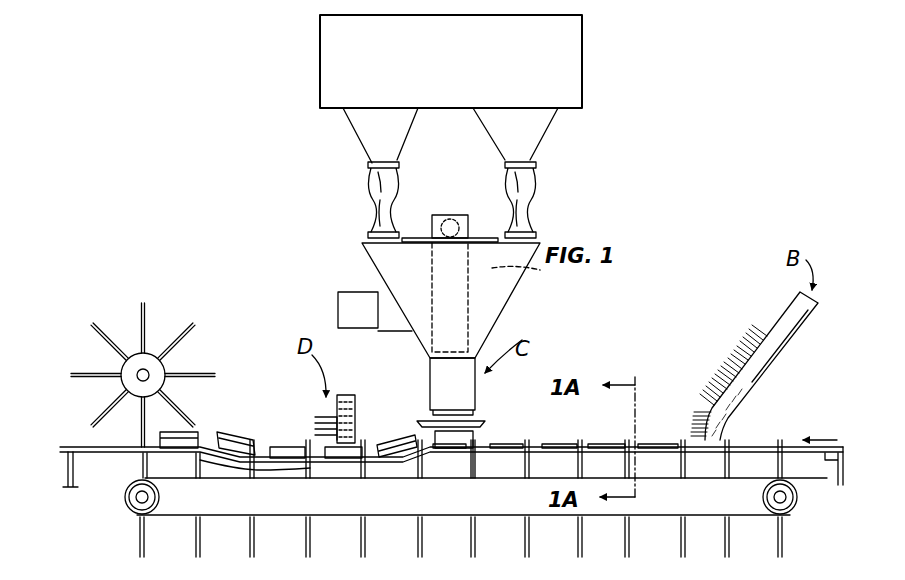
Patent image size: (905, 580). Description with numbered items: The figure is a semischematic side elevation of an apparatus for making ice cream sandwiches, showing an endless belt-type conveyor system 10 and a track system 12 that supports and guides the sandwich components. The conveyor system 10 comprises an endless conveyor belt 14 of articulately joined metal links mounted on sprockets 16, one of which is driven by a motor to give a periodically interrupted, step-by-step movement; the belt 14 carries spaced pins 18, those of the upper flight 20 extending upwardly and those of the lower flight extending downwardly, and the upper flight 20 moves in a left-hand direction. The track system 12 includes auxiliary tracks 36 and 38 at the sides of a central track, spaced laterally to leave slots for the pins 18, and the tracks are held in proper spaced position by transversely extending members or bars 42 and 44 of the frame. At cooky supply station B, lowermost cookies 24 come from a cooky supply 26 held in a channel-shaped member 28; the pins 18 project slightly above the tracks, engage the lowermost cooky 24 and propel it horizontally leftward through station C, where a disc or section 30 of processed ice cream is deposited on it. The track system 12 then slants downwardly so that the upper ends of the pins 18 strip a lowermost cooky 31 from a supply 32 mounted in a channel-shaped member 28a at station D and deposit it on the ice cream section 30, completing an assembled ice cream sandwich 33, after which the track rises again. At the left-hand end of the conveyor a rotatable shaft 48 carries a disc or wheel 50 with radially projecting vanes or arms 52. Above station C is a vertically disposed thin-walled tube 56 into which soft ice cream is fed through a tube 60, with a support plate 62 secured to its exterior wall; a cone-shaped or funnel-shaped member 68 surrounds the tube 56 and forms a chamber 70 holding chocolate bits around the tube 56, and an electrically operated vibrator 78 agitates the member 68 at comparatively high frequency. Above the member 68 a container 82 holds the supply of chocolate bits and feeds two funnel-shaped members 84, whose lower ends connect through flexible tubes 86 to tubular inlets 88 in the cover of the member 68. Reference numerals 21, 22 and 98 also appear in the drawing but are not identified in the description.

The endless belt-type conveyor system 10 is at (652, 520).
The track system 12 is at (757, 442).
The endless conveyor belt 14 is at (342, 537).
The sprockets 16 is at (125, 500).
The pins 18 is at (138, 545).
The upper flight 20 is at (380, 482).
The belt depression 21 is at (233, 512).
The drive 22 is at (318, 576).
The lowermost cookies 24 is at (600, 445).
The cooky supply 26 is at (719, 374).
The channel-shaped member 28 is at (782, 335).
The channel-shaped member 28a is at (343, 398).
The ice cream disc, center or section 30 is at (421, 432).
The lowermost cooky 31 is at (234, 430).
The supply of cookies 32 is at (338, 405).
The assembled ice cream sandwich 33 is at (165, 430).
The auxiliary track 36 is at (441, 576).
The auxiliary track 38 is at (505, 470).
The transversely extending member or bar 42 is at (833, 470).
The transversely extending member or bar 44 is at (74, 476).
The rotatable shaft 48 is at (138, 374).
The disc or wheel 50 is at (133, 347).
The vanes or arms 52 is at (148, 307).
The tube 56 is at (432, 226).
The tube 60 is at (455, 215).
The support plate 62 is at (478, 236).
The cone-shaped or funnel-shaped member 68 is at (508, 300).
The chamber 70 is at (533, 282).
The vibrator 78 is at (356, 294).
The container 82 is at (463, 62).
The funnel-shaped members 84 is at (363, 120).
The tubes 86 is at (373, 180).
The tubular inlets 88 is at (378, 238).
The spout 98 is at (432, 385).